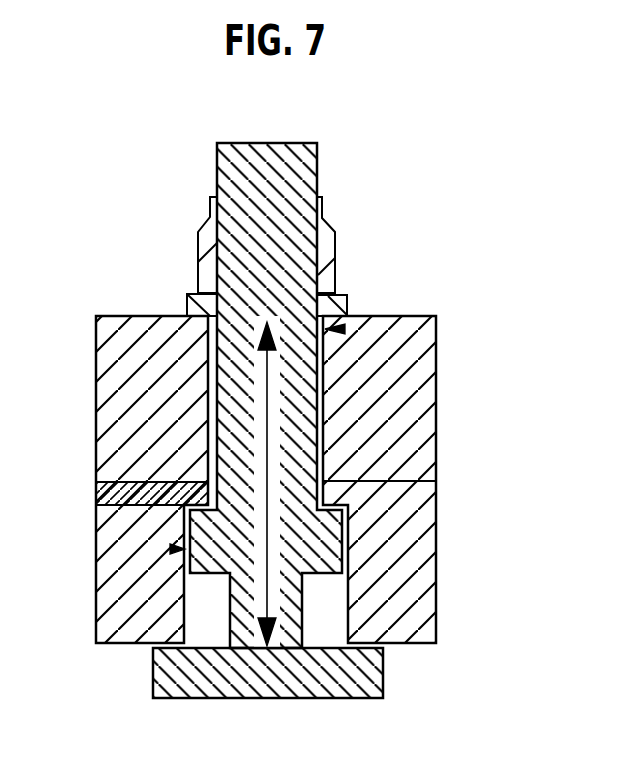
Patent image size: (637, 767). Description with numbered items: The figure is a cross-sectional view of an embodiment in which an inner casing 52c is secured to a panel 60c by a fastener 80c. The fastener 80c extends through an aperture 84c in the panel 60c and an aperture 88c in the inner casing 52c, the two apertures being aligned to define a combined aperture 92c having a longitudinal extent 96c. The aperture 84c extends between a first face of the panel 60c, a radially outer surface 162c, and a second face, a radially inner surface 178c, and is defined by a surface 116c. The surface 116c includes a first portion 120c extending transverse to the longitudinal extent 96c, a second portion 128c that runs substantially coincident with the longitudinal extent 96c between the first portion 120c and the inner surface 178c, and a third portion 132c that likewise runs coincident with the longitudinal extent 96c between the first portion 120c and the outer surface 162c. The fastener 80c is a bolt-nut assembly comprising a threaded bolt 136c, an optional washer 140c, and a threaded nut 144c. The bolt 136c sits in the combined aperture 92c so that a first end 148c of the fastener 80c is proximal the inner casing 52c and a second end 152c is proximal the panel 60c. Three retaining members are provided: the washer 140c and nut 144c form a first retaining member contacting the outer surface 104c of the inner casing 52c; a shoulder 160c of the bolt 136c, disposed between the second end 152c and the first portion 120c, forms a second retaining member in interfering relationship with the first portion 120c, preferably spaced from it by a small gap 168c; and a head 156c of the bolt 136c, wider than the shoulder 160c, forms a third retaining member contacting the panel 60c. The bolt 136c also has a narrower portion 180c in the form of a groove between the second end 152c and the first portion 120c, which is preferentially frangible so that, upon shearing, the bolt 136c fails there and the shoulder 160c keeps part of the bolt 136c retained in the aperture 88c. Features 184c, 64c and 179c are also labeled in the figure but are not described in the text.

The fastener 80c is at (387, 182).
The first end 148c is at (282, 143).
The left upper wall 184c is at (215, 172).
The threaded nut 144c is at (332, 272).
The threaded bolt 136c is at (250, 203).
The optional washer 140c is at (347, 298).
The aperture 88c is at (207, 337).
The first portion 120c is at (97, 502).
The third portion 132c is at (97, 492).
The gap 168c is at (190, 510).
The surface 116c is at (172, 549).
The second portion 128c is at (188, 556).
The shoulder 160c is at (187, 583).
The panel 60c is at (232, 606).
The narrower portion 180c is at (100, 643).
The inner casing 52c is at (436, 375).
The outer surface 104c is at (412, 315).
The radially outer surface 162c is at (412, 473).
The housing lower portion 64c is at (410, 480).
The stem shoulder 179c is at (340, 537).
The aperture 84c is at (352, 578).
The radially inner surface 178c is at (417, 643).
The combined aperture 92c is at (343, 329).
The second end 152c is at (273, 698).
The head 156c is at (352, 663).
The longitudinal extent 96c is at (267, 448).